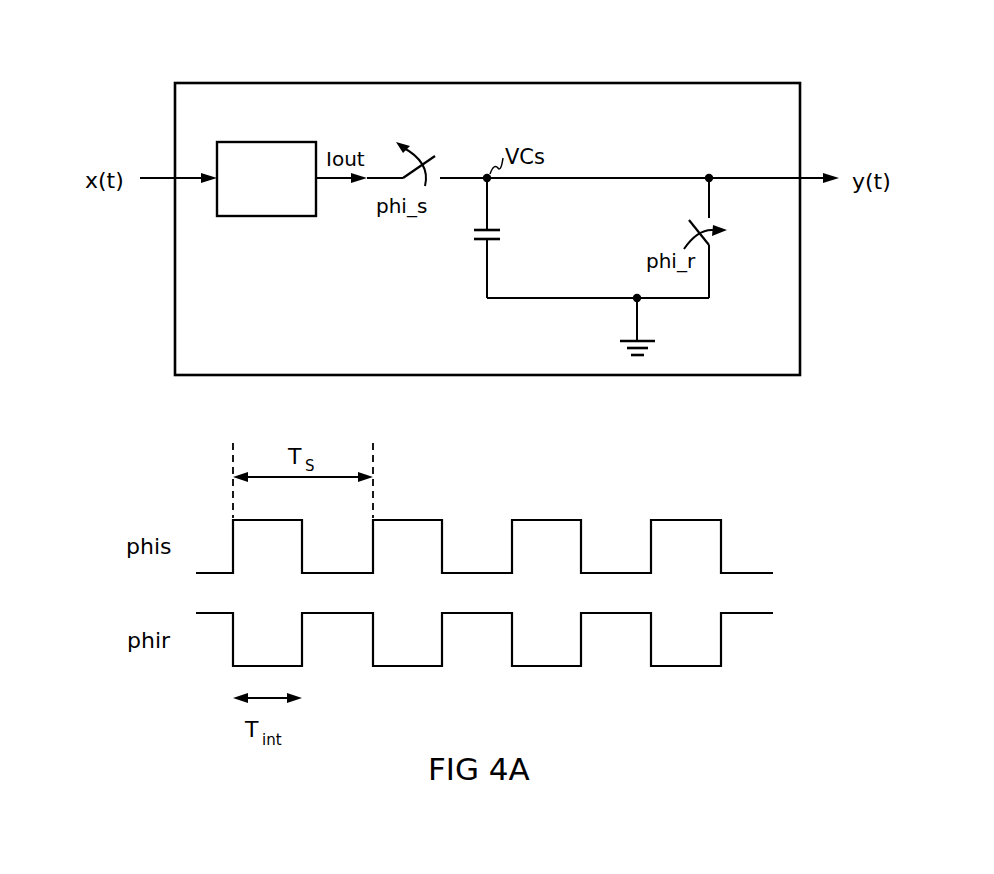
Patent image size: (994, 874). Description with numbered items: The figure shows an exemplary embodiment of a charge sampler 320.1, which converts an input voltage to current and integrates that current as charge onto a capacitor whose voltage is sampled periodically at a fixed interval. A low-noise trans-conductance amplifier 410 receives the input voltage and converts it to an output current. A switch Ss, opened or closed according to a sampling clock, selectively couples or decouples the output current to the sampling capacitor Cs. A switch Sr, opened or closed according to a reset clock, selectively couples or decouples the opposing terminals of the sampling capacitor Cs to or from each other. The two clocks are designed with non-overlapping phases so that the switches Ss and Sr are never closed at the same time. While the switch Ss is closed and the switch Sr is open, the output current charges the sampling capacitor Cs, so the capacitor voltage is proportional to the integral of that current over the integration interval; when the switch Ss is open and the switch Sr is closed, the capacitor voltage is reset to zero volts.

The charge sampler 320.1 is at (433, 83).
The low-noise trans-conductance amplifier (LNTA) 410 is at (253, 141).
The switch Ss is at (422, 145).
The switch Sr is at (729, 218).
The sampling capacitor Cs is at (471, 238).